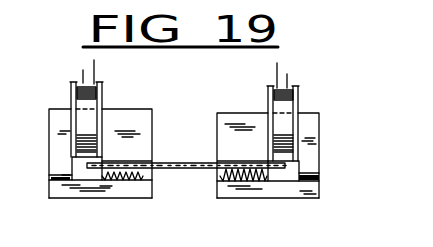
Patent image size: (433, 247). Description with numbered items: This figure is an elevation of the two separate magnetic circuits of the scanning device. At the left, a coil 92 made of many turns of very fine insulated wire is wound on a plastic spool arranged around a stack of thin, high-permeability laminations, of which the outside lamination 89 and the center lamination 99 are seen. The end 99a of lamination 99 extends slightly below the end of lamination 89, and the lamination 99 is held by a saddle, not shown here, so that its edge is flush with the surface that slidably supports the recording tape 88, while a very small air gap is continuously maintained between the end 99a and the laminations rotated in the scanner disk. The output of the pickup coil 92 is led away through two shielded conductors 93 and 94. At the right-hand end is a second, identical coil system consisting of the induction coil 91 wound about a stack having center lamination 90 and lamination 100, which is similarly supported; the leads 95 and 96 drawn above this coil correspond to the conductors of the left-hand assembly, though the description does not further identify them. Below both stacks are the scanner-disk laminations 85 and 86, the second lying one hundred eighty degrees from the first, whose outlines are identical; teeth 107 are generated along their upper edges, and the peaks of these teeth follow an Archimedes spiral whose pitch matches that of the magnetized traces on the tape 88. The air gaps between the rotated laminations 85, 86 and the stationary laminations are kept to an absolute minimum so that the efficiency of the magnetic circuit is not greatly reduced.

The lamination 85 is at (157, 194).
The lamination 86 is at (318, 199).
The tape 88 is at (207, 167).
The lamination 89 is at (58, 125).
The lamination 90 is at (257, 115).
The induction coil 91 is at (298, 103).
The coil 92 is at (101, 88).
The shielded conductor 93 is at (94, 60).
The shielded conductor 94 is at (83, 70).
The right piston 95 is at (277, 77).
The right piston head 96 is at (277, 63).
The lamination 99 is at (152, 163).
The end of lamination 99a is at (51, 180).
The lamination 100 is at (240, 165).
The teeth 107 is at (218, 178).